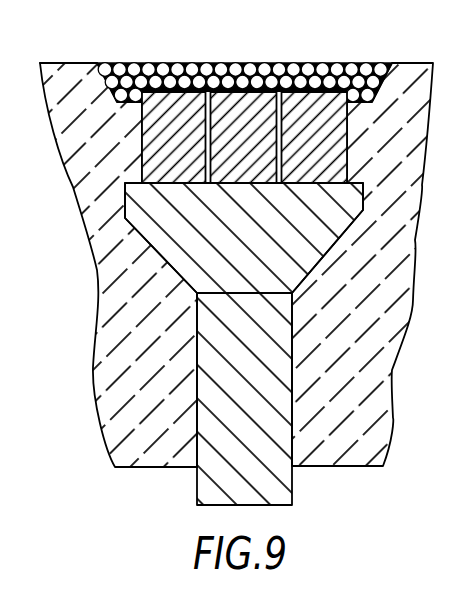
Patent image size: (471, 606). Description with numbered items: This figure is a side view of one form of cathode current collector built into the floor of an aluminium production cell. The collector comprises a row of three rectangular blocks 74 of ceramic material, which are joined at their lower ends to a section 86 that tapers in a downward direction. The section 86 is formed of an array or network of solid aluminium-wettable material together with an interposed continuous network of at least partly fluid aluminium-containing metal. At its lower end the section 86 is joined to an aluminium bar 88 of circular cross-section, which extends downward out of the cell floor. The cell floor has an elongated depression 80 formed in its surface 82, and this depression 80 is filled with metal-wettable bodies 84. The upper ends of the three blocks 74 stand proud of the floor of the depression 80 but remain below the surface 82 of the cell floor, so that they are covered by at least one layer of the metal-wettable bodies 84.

The rectangular blocks 74 is at (308, 162).
The elongated depression 80 is at (101, 84).
The surface 82 is at (74, 63).
The metal-wettable bodies 84 is at (208, 68).
The section 86 is at (302, 262).
The aluminium bar 88 is at (213, 388).